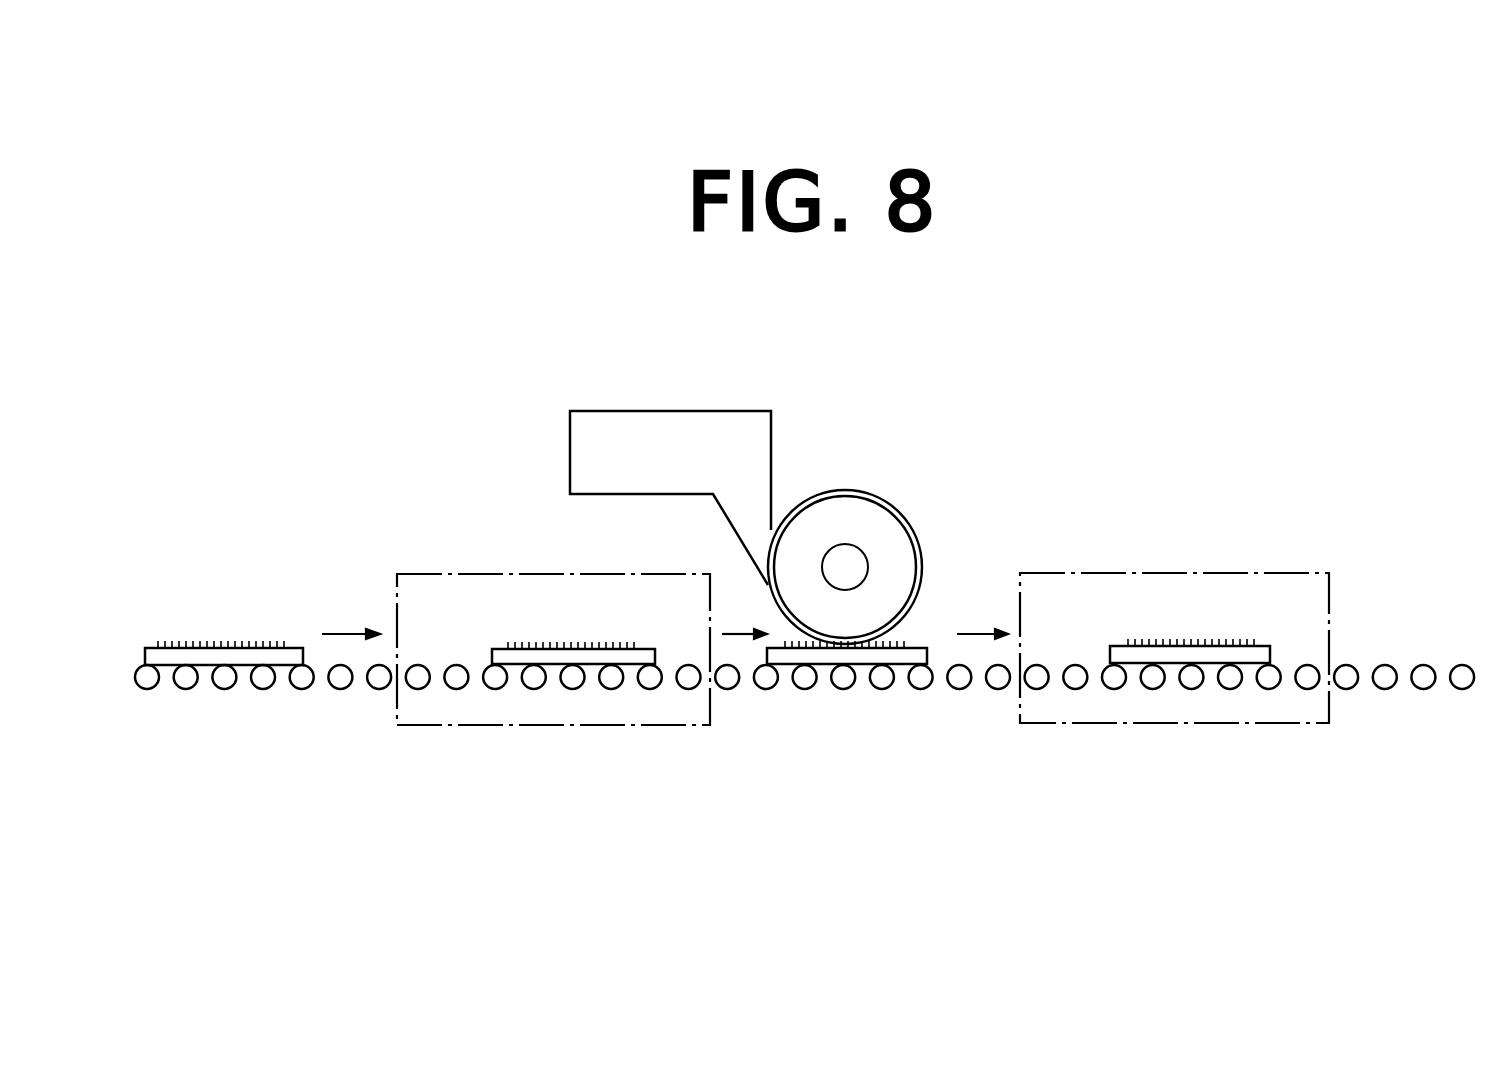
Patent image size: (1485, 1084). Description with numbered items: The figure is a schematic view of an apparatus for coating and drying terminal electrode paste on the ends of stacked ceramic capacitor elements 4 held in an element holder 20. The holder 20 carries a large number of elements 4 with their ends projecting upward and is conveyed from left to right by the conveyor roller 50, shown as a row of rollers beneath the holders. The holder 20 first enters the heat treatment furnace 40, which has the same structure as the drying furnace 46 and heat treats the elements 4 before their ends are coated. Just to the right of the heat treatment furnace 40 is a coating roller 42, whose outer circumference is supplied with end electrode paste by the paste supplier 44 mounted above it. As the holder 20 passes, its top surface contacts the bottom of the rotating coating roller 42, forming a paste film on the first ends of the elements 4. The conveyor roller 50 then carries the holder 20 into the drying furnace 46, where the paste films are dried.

The element 4 is at (252, 640).
The element holder 20 is at (206, 660).
The heat treatment furnace 40 is at (490, 574).
The coating roller 42 is at (862, 525).
The paste supplier 44 is at (675, 438).
The drying furnace 46 is at (1177, 572).
The conveyor roller 50 is at (376, 683).